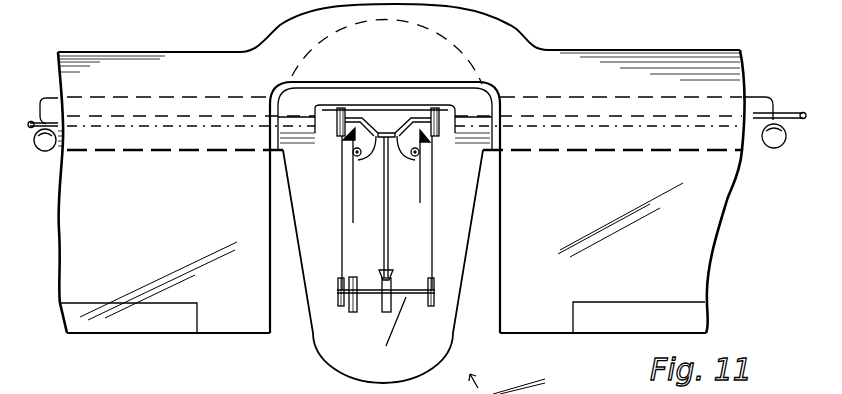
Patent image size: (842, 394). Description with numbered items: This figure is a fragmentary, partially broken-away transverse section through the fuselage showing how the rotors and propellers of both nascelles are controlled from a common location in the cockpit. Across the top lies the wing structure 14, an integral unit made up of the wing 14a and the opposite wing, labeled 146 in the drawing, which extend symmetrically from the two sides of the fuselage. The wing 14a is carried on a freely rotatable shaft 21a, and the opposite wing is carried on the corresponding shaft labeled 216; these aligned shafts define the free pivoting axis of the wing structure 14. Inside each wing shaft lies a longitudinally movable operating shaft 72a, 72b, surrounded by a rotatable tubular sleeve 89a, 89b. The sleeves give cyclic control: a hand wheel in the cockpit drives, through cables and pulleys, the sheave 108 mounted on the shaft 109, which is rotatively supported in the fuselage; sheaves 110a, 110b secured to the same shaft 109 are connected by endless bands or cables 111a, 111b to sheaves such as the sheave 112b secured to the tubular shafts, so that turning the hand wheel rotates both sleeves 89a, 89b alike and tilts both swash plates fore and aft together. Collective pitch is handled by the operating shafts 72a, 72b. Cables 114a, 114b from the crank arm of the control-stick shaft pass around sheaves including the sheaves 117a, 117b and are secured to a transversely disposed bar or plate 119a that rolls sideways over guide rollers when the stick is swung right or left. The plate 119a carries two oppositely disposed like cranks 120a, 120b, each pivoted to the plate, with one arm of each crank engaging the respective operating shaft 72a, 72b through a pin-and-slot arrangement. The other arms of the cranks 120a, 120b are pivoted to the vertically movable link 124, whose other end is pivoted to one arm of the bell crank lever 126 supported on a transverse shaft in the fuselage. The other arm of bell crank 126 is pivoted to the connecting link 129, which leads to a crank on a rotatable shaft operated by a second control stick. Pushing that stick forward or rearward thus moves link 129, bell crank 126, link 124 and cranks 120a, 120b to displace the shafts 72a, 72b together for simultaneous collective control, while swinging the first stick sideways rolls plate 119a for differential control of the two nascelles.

The wing structure 14 is at (210, 75).
The wing 14a is at (103, 325).
The right base portion 146 is at (630, 323).
The coaxial shaft 21a is at (52, 157).
The right side wall 216 is at (745, 156).
The rotatable sleeve 89a is at (32, 120).
The tubular shaft 89b is at (776, 148).
The longitudinally movable rod 72a is at (350, 118).
The longitudinally movable operating shaft 72b is at (421, 118).
The transversely disposed bar 119a is at (345, 133).
The crank 120a is at (372, 139).
The crank 120b is at (397, 139).
The sheave 117a is at (352, 160).
The sheave 117b is at (420, 160).
The endless band or cable 111a is at (342, 232).
The endless band or cable 111b is at (433, 220).
The cable 114a is at (353, 220).
The cable 114b is at (419, 165).
The link 124 is at (389, 240).
The bell crank lever 126 is at (391, 278).
The sheave 110a is at (337, 290).
The sheave 110b is at (438, 290).
The sheave 108 is at (362, 300).
The shaft 109 is at (398, 304).
The connecting link 129 is at (397, 331).
The sheave 112b is at (479, 384).